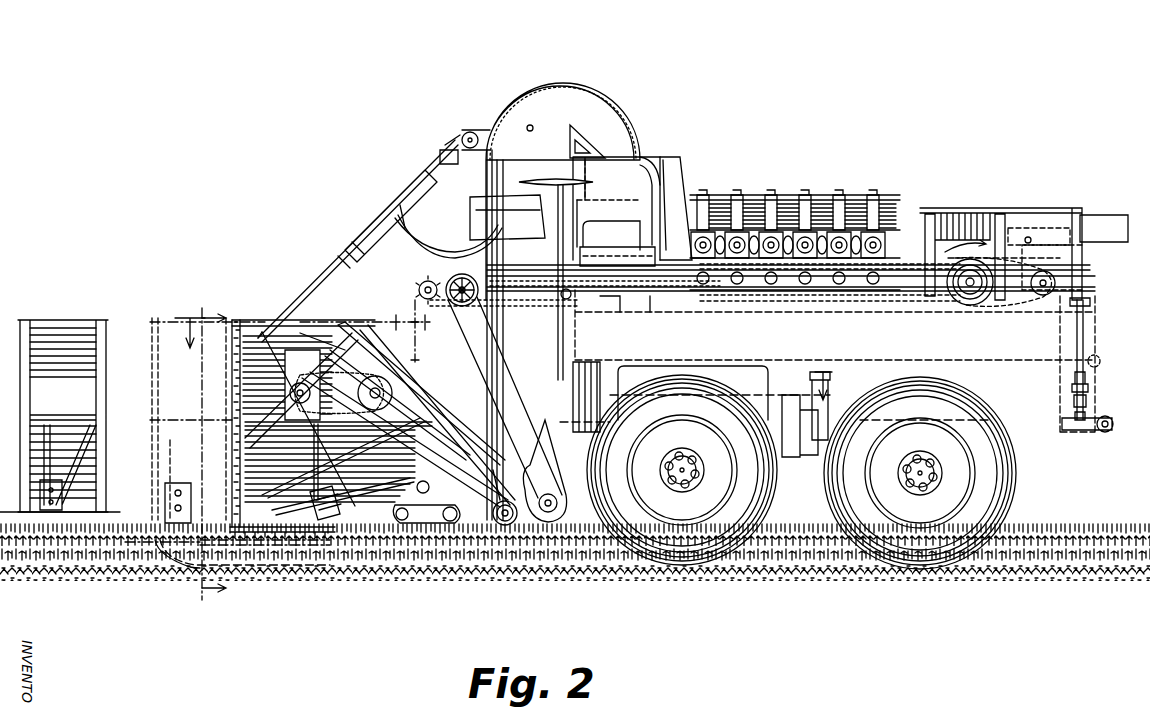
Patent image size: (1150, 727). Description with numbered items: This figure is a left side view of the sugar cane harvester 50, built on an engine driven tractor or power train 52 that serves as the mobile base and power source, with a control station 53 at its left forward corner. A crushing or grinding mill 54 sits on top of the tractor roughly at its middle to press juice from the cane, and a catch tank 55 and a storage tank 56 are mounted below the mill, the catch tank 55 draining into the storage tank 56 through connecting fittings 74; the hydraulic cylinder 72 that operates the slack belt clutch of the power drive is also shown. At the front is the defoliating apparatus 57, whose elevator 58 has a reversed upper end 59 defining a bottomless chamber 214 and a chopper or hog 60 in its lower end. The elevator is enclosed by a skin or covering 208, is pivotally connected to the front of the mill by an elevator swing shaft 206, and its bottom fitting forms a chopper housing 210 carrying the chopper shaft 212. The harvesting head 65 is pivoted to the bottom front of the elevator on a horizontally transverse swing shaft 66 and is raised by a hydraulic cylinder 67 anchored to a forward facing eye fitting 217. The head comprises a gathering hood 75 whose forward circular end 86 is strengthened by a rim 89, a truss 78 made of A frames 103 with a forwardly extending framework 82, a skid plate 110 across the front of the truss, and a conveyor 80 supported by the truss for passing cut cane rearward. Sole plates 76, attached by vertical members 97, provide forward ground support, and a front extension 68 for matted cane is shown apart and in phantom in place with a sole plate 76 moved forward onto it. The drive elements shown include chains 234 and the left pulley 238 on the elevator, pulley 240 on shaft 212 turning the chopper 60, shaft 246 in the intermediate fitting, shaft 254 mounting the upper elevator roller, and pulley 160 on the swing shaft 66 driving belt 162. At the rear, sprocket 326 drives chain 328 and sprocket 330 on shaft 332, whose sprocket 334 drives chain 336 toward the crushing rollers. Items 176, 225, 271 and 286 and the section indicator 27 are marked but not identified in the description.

The sugar cane harvester 50 is at (1075, 242).
The tractor or power train 52 is at (1013, 505).
The control station 53 is at (503, 198).
The crushing or grinding mill 54 is at (752, 193).
The catch juice tank 55 is at (868, 310).
The storage juice tank 56 is at (1042, 435).
The defoliating apparatus 57 is at (488, 118).
The elevator 58 is at (553, 92).
The reversed upper end 59 is at (598, 118).
The chopper or hog 60 is at (558, 510).
The harvesting head 65 is at (262, 330).
The horizontally-transverse swing shaft 66 is at (500, 522).
The hydraulic cylinder 67 is at (380, 218).
The front extension 68 is at (65, 318).
The hydraulic cylinder 72 is at (1094, 354).
The connecting fittings 74 is at (1083, 326).
The gathering hood 75 is at (238, 396).
The sole plates 76 is at (192, 567).
The truss 78 is at (408, 304).
The conveyor 80 is at (440, 524).
The forwardly extending framework 82 is at (354, 320).
The circular end 86 is at (234, 384).
The rim 89 is at (234, 326).
The vertical members 97 is at (236, 490).
The A frame 103 is at (412, 420).
The skid plate 110 is at (358, 506).
The pulley 160 is at (504, 530).
The belt 162 is at (492, 478).
The chain drive 176 is at (350, 414).
The elevator swing shaft 206 is at (580, 297).
The skin or covering 208 is at (482, 382).
The chopper housing 210 is at (548, 516).
The shaft 212 is at (497, 504).
The bottomless chamber 214 is at (632, 168).
The eye fitting 217 is at (466, 130).
The rear box 225 is at (1108, 214).
The chains 234 is at (530, 304).
The left pulley 238 is at (470, 332).
The pulley 240 is at (546, 500).
The shaft 246 is at (428, 282).
The shaft 254 is at (532, 126).
The seat 271 is at (615, 205).
The rear frame 286 is at (990, 250).
The sprocket 326 is at (1040, 283).
The endless chain 328 is at (1025, 266).
The sprocket 330 is at (996, 298).
The shaft 332 is at (974, 300).
The sprocket 334 is at (958, 292).
The endless chain 336 is at (828, 300).
The section line 27 is at (492, 429).